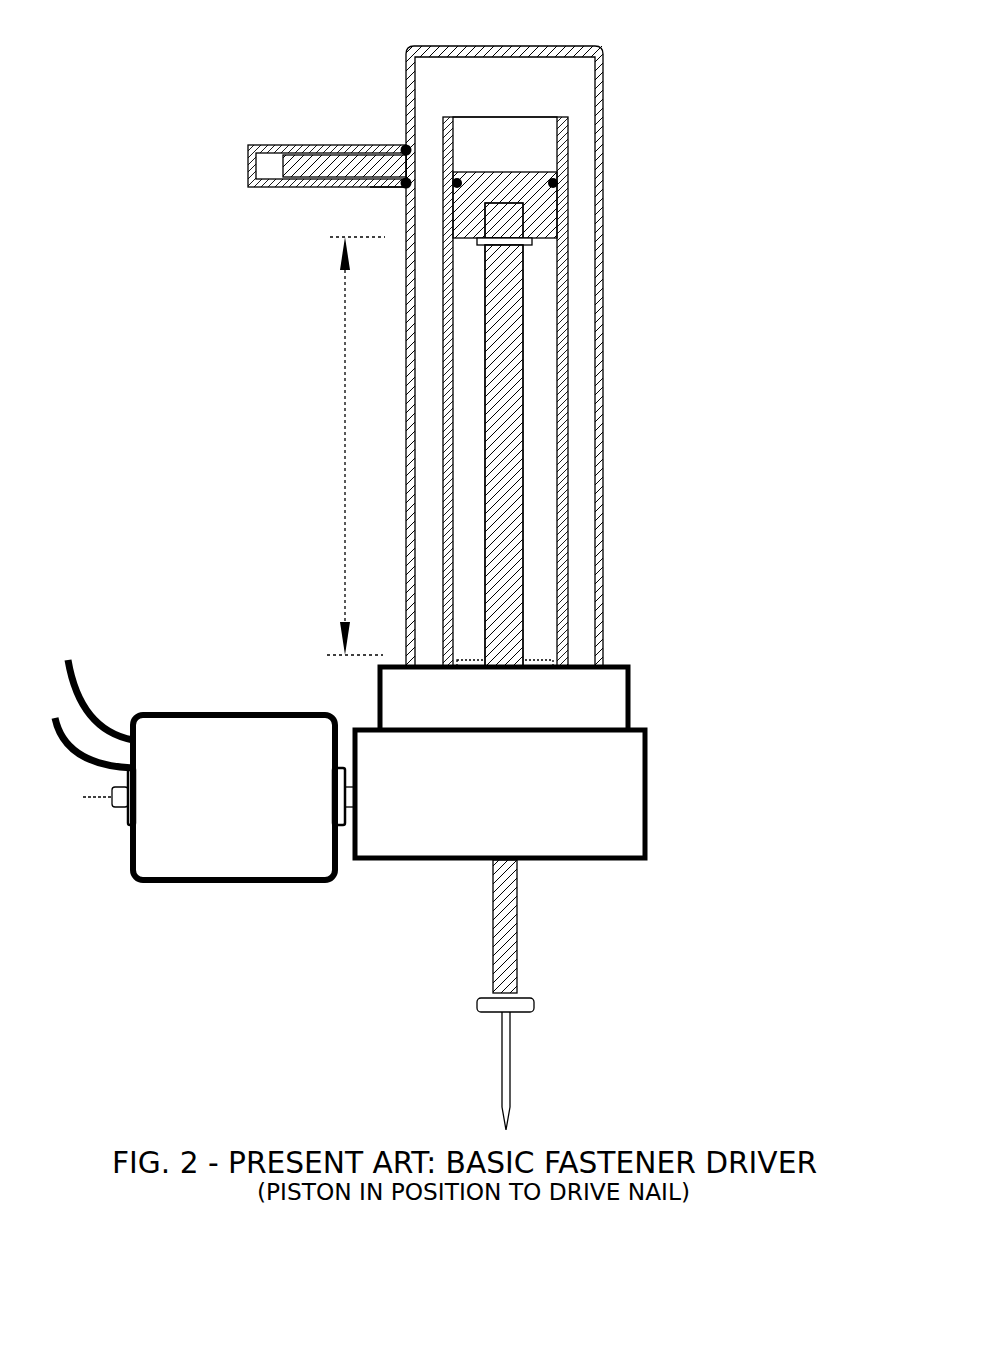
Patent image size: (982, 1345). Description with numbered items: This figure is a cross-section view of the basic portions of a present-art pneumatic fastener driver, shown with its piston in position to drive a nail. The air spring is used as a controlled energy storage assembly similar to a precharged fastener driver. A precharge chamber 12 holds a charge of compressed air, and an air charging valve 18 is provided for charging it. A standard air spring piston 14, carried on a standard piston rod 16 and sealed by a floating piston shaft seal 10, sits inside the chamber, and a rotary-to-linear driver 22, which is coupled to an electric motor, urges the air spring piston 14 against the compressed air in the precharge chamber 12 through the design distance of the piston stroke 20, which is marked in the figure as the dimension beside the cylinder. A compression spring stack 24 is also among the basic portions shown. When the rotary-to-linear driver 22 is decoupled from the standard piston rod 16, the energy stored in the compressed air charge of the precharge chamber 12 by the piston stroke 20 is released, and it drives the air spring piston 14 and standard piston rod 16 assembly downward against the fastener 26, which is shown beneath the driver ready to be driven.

The floating piston shaft seal 10 is at (555, 185).
The precharge chamber 12 is at (512, 145).
The standard air spring piston 14 is at (407, 143).
The standard piston rod 16 is at (505, 520).
The air charging valve 18 is at (380, 185).
The piston stroke 20 is at (345, 478).
The rotary-to-linear driver 22 is at (523, 767).
The compression spring stack 24 is at (263, 755).
The fastener 26 is at (505, 1057).